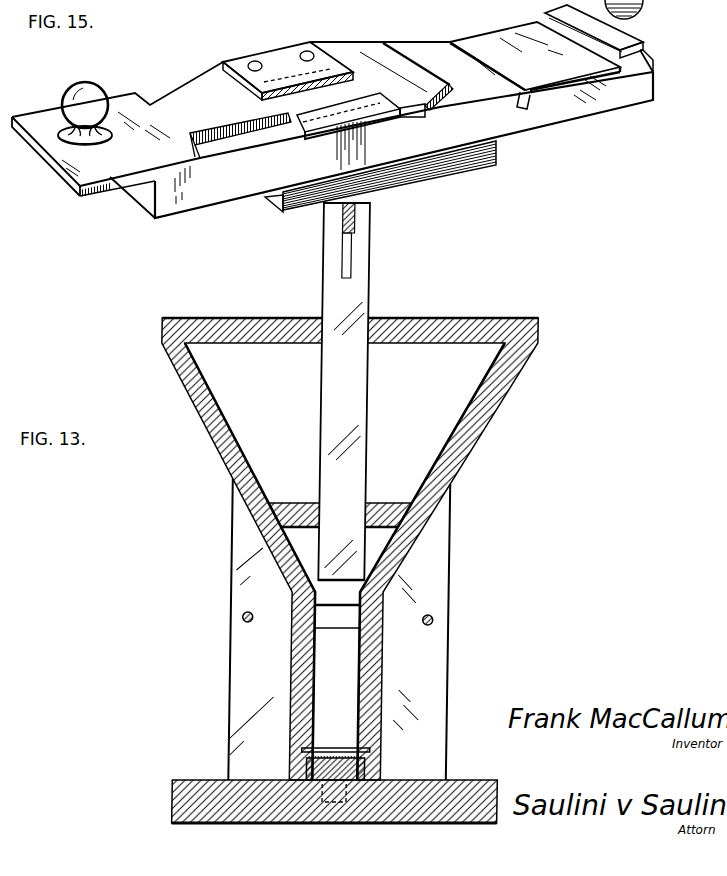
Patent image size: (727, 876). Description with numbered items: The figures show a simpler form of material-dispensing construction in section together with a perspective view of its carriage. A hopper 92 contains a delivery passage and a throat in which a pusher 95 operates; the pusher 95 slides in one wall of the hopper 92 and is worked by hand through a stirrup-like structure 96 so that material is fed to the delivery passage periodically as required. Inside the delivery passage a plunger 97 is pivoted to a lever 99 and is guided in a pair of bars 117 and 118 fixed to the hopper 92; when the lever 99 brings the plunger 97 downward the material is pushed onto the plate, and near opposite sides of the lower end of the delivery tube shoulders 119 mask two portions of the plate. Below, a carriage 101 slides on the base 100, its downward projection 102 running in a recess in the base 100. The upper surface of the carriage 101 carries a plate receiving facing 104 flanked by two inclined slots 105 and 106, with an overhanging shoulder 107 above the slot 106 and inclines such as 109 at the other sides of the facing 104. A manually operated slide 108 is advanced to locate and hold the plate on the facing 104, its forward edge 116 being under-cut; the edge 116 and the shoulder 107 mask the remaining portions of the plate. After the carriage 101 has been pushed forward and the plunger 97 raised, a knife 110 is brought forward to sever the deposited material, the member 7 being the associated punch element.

In FIG. 13, the punch 7 is at (340, 758).
In FIG. 13, the hopper 92 is at (238, 472).
In FIG. 13, the pusher 95 is at (340, 613).
In FIG. 13, the stirrup-like structure 96 is at (433, 619).
In FIG. 13, the plunger 97 is at (345, 409).
In FIG. 13, the lever 99 is at (349, 218).
In FIG. 13, the base 100 is at (197, 808).
In FIG. 15, the carriage 101 is at (381, 130).
In FIG. 13, the carriage 101 is at (309, 769).
In FIG. 15, the downward projection 102 is at (470, 162).
In FIG. 15, the plate receiving facing 104 is at (520, 52).
In FIG. 15, the inclined slot 105 is at (528, 106).
In FIG. 15, the inclined slot 106 is at (650, 97).
In FIG. 15, the overhanging shoulder 107 is at (607, 50).
In FIG. 15, the manually operated slide 108 is at (208, 105).
In FIG. 15, the incline 109 is at (592, 92).
In FIG. 13, the knife 110 is at (327, 748).
In FIG. 15, the forward edge of slide 116 is at (453, 76).
In FIG. 13, the guide bar 117 is at (376, 318).
In FIG. 13, the guide bar 118 is at (371, 503).
In FIG. 13, the shoulder 119 is at (372, 755).